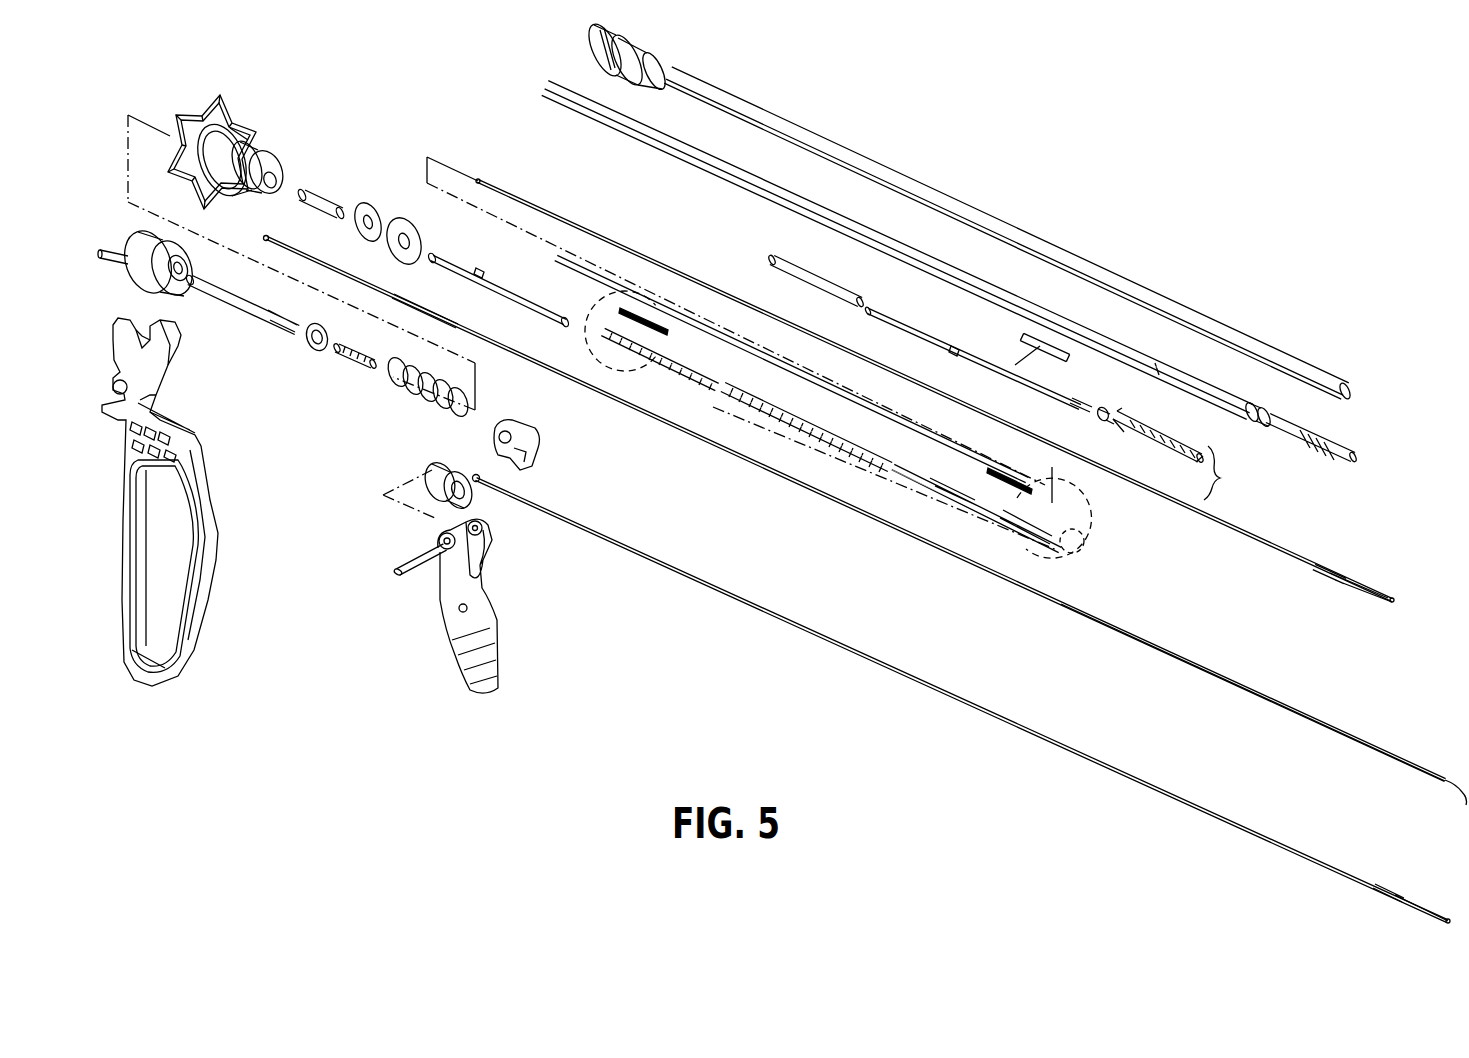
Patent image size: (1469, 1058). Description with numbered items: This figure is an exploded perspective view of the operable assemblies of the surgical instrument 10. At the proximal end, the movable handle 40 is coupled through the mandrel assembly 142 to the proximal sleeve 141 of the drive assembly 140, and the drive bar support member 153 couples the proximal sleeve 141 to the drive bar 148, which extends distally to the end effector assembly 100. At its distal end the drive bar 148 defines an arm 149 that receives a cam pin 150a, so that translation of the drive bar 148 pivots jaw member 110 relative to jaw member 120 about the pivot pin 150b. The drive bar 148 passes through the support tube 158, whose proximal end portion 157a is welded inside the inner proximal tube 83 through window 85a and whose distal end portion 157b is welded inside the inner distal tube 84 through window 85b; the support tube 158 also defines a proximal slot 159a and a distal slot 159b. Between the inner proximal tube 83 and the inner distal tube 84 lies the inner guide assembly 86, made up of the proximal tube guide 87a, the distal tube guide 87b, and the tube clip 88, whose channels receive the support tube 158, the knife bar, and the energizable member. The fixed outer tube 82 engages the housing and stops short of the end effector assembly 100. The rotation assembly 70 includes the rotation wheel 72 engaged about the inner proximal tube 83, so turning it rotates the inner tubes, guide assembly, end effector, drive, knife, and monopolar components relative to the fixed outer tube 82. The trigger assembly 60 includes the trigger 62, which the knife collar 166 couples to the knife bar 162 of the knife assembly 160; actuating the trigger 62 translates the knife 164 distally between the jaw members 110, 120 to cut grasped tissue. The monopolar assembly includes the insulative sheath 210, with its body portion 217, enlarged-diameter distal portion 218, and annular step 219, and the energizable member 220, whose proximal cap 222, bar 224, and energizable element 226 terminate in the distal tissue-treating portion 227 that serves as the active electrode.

The surgical instrument 10 is at (844, 436).
The movable handle 40 is at (225, 630).
The trigger assembly 60 is at (512, 639).
The trigger 62 is at (512, 680).
The rotation assembly 70 is at (226, 83).
The rotation wheel 72 is at (246, 122).
The fixed outer tube 82 is at (1078, 257).
The inner proximal tube 83 is at (432, 252).
The inner distal tube 84 is at (905, 320).
The window 85a is at (484, 271).
The window 85b is at (956, 346).
The inner guide assembly 86 is at (1050, 556).
The proximal tube guide 87a is at (670, 367).
The distal tube guide 87b is at (1084, 550).
The tube clip 88 is at (853, 457).
The end effector assembly 100 is at (1225, 473).
The jaw member 110 is at (1172, 440).
The jaw member 120 is at (1192, 463).
The drive assembly 140 is at (210, 318).
The proximal sleeve 141 is at (238, 296).
The mandrel assembly 142 is at (124, 225).
The drive bar 148 is at (525, 197).
The arm 149 is at (1374, 600).
The cam pin 150a is at (1124, 440).
The pivot pin 150b is at (1118, 435).
The drive bar support member 153 is at (352, 364).
The proximal end portion 157a is at (616, 292).
The distal end portion 157b is at (1056, 492).
The inner tube 158 is at (843, 405).
The proximal slot 159a is at (660, 308).
The distal slot 159b is at (998, 468).
The knife assembly 160 is at (527, 482).
The knife bar 162 is at (737, 600).
The knife 164 is at (1392, 894).
The knife collar 166 is at (530, 426).
The insulative sheath 210 is at (647, 152).
The body portion 217 is at (897, 247).
The enlarged-diameter distal portion 218 is at (1322, 446).
The annular step 219 is at (1256, 404).
The energizable member 220 is at (745, 460).
The proximal cap 222 is at (262, 237).
The bar 224 is at (1158, 662).
The energizable element 226 is at (1449, 776).
The distal tissue-treating portion 227 is at (1466, 803).